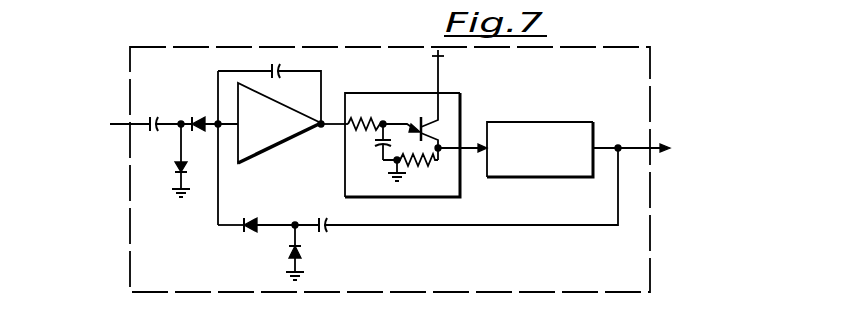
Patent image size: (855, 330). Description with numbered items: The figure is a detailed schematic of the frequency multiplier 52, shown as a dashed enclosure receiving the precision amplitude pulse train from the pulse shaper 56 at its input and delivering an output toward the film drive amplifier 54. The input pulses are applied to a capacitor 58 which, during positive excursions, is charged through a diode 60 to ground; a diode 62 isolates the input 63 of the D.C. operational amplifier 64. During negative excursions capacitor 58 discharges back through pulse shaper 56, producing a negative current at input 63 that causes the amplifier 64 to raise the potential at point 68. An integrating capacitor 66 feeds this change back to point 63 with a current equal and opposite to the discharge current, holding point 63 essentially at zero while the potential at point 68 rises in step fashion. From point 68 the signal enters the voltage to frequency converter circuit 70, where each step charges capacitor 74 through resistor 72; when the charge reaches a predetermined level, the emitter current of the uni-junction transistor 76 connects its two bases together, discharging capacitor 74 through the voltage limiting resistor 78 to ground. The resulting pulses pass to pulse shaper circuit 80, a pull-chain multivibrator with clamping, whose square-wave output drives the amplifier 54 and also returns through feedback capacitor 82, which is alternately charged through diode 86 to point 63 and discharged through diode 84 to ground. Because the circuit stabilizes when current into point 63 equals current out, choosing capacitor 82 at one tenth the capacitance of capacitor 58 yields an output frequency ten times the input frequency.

The frequency multiplier 52 is at (131, 236).
The film drive amplifier 54 is at (682, 156).
The pulse shaper 56 is at (96, 118).
The capacitor 58 is at (152, 116).
The diode 60 is at (176, 172).
The diode 62 is at (193, 117).
The input of operational amplifier 63 is at (221, 128).
The operational amplifier 64 is at (281, 146).
The integrating capacitor 66 is at (277, 64).
The point 68 is at (324, 119).
The voltage to frequency converter circuit 70 is at (402, 100).
The resistor 72 is at (356, 128).
The capacitor 74 is at (372, 144).
The uni-junction transistor 76 is at (440, 130).
The voltage limiting resistor 78 is at (422, 166).
The pulse shaper circuit 80 is at (578, 122).
The feedback capacitor 82 is at (323, 233).
The diode 84 is at (302, 250).
The diode 86 is at (251, 233).